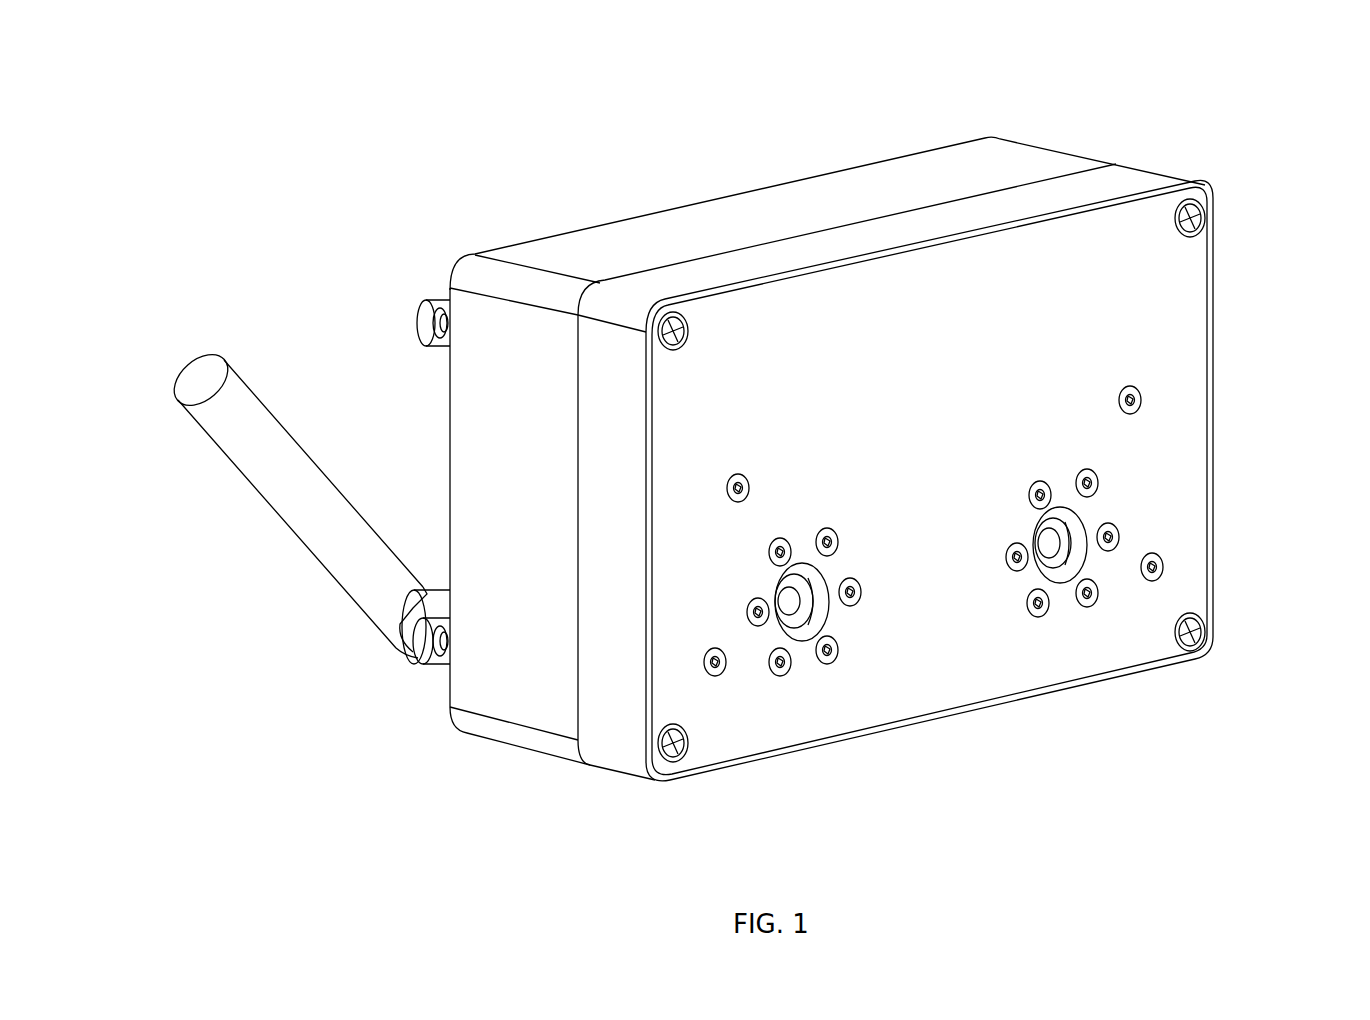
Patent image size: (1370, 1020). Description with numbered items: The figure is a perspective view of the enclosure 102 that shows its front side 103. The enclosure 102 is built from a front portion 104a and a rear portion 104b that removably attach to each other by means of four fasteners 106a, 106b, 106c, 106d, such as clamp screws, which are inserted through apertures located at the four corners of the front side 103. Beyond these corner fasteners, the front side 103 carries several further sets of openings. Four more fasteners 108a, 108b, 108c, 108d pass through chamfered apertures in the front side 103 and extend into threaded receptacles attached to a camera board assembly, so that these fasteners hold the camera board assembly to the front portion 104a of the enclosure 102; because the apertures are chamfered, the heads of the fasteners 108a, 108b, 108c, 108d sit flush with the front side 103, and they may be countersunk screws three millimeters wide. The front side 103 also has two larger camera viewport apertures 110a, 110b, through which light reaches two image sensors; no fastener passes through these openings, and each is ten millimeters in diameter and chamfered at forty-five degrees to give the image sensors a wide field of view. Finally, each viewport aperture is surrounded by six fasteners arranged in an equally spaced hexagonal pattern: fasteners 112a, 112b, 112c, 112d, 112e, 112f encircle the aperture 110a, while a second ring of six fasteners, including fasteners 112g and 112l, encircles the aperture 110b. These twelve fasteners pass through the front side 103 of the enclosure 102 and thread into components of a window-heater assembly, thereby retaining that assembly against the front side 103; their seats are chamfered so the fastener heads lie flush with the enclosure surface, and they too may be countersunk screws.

The enclosure 102 is at (1135, 52).
The front side 103 is at (1172, 345).
The front portion 104a is at (1170, 176).
The rear portion 104b is at (1020, 142).
The fastener 106a is at (1205, 218).
The fastener 106b is at (1207, 632).
The fastener 106c is at (680, 758).
The fastener 106d is at (673, 312).
The fastener 108a is at (1143, 402).
The fastener 108b is at (1163, 565).
The fastener 108c is at (718, 677).
The fastener 108d is at (727, 488).
The camera viewport aperture 110a is at (828, 622).
The camera viewport aperture 110b is at (1087, 560).
The fastener 112a is at (838, 550).
The fastener 112b is at (858, 606).
The fastener 112c is at (827, 665).
The fastener 112d is at (782, 677).
The fastener 112e is at (747, 612).
The fastener 112f is at (769, 550).
The fastener 112g is at (1098, 483).
The fastener 112l is at (1046, 480).